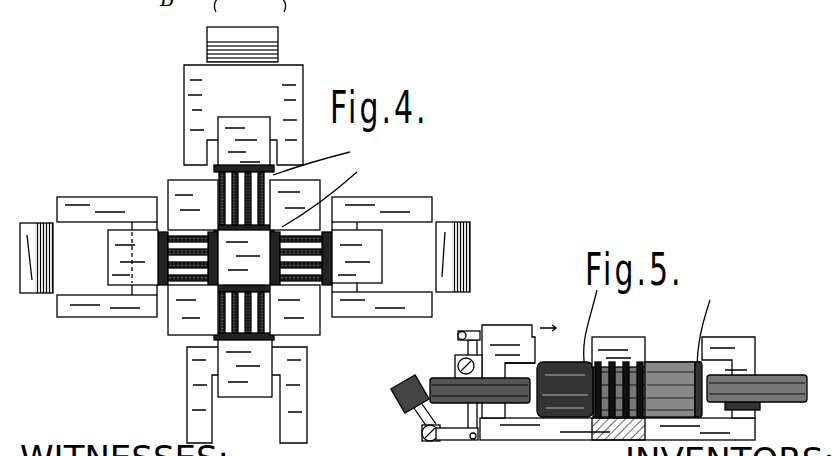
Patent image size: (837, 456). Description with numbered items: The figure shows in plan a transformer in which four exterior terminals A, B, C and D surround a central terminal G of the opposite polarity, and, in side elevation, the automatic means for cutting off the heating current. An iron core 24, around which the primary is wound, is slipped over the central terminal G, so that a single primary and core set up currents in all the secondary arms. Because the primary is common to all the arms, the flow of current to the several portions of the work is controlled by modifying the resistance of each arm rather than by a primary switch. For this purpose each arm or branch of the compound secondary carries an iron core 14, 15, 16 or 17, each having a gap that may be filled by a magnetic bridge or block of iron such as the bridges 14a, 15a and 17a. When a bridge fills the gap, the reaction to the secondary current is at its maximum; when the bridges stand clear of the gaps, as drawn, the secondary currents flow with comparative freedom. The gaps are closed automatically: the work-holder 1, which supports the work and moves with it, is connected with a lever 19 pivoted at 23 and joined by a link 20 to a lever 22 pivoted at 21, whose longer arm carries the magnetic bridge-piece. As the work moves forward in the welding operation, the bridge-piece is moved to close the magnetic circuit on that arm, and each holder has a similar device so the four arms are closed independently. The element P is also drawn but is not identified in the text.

In FIG. 4, the magnetic bridge 14a is at (212, 40).
In FIG. 4, the iron core 14 is at (192, 102).
In FIG. 4, the terminal C is at (236, 152).
In FIG. 4, the iron core 24 is at (181, 322).
In FIG. 5, the iron core 24 is at (575, 362).
In FIG. 4, the terminal G is at (275, 290).
In FIG. 5, the terminal G is at (622, 318).
In FIG. 4, the iron core 17 is at (120, 312).
In FIG. 5, the iron core 17 is at (440, 376).
In FIG. 4, the terminal A is at (120, 256).
In FIG. 4, the magnetic bridge 17a is at (34, 293).
In FIG. 5, the magnetic bridge 17a is at (408, 402).
In FIG. 4, the iron core 15 is at (393, 200).
In FIG. 5, the iron core 15 is at (778, 382).
In FIG. 4, the terminal B is at (372, 250).
In FIG. 5, the terminal B is at (735, 342).
In FIG. 4, the magnetic bridge 15a is at (448, 232).
In FIG. 4, the iron core 16 is at (298, 394).
In FIG. 4, the terminal D is at (248, 380).
In FIG. 5, the work-holder 1 is at (522, 332).
In FIG. 5, the lever 19 is at (468, 420).
In FIG. 5, the pivot 23 is at (462, 358).
In FIG. 5, the lever 22 is at (425, 418).
In FIG. 5, the pivot 21 is at (426, 440).
In FIG. 5, the link 20 is at (458, 440).
In FIG. 5, the piston / plunger P is at (665, 365).